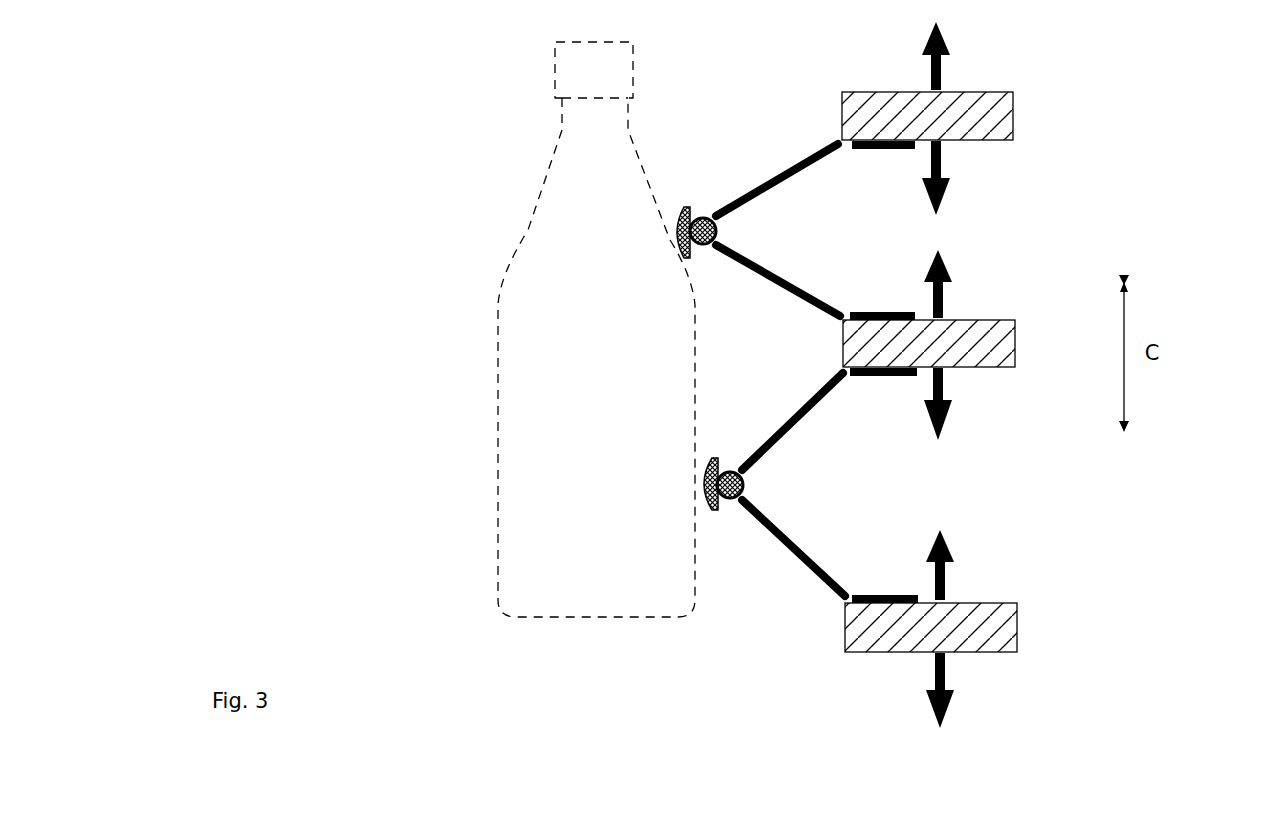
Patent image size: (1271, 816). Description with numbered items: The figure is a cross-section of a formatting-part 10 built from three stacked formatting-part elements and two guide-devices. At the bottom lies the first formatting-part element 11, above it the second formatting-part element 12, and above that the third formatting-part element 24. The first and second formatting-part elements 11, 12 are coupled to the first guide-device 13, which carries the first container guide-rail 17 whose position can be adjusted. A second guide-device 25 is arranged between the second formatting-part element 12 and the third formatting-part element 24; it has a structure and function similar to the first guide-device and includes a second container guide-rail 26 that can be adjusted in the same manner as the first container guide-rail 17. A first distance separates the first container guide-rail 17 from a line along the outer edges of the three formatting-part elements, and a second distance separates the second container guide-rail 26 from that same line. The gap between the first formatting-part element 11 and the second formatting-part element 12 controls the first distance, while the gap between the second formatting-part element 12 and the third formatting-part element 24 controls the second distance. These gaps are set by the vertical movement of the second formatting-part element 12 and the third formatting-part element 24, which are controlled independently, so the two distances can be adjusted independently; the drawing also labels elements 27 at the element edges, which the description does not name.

The formatting-part 10 is at (1120, 538).
The first formatting-part element 11 is at (1008, 633).
The second formatting-part element 12 is at (977, 350).
The first guide-device 13 is at (876, 480).
The first container guide-rail 17 is at (700, 490).
The third formatting-part element 24 is at (985, 100).
The second guide-device 25 is at (700, 97).
The second container guide-rail 26 is at (672, 228).
The sliding element 27 is at (823, 108).